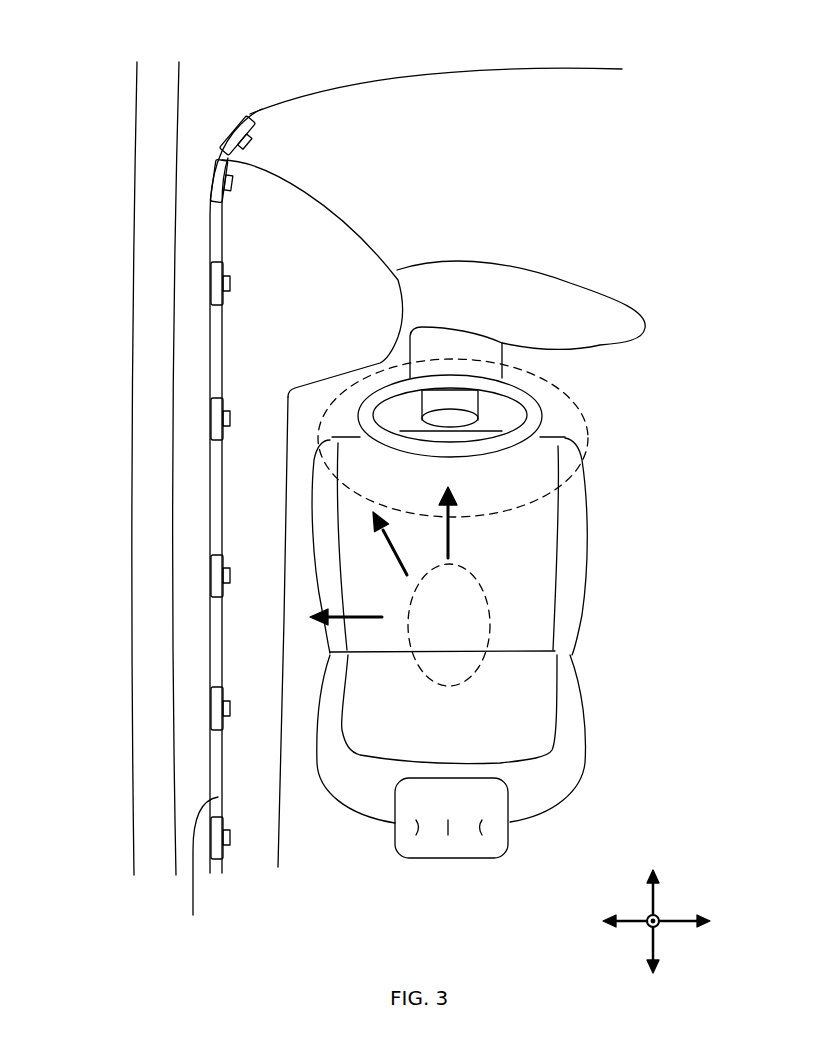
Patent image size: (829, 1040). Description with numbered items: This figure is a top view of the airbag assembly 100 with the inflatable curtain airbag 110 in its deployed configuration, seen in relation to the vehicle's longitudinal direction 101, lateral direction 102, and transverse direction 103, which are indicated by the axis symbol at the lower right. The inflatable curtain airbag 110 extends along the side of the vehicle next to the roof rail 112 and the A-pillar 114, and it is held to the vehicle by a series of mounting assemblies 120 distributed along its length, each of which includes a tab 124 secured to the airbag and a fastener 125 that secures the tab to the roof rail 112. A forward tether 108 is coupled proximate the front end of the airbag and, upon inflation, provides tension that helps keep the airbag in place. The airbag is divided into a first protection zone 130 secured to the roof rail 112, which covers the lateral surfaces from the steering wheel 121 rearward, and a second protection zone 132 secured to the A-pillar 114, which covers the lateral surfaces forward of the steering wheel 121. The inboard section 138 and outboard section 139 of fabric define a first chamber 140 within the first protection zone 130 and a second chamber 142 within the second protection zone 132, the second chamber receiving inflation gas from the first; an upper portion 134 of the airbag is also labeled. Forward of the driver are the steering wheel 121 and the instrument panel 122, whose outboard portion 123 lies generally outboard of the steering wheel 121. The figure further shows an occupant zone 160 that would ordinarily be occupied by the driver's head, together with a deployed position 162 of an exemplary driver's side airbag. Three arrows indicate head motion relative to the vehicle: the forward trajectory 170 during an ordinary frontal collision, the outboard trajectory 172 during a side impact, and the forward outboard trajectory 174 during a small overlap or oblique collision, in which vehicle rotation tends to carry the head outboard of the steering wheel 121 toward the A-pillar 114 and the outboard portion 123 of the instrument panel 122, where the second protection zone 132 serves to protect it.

The airbag assembly 100 is at (385, 107).
The longitudinal direction 101 is at (657, 887).
The lateral direction 102 is at (685, 918).
The transverse direction 103 is at (658, 927).
The forward tether 108 is at (257, 113).
The inflatable curtain airbag 110 is at (420, 290).
The roof rail 112 is at (190, 418).
The A-pillar 114 is at (190, 233).
The mounting assemblies 120 is at (200, 582).
The steering wheel 121 is at (533, 397).
The instrument panel 122 is at (438, 142).
The outboard portion 123 is at (365, 205).
The tab 124 is at (217, 397).
The fastener 125 is at (232, 418).
The first protection zone 130 is at (200, 508).
The second protection zone 132 is at (283, 167).
The upper portion 134 is at (282, 708).
The inboard section 138 is at (278, 850).
The outboard section 139 is at (198, 869).
The first chamber 140 is at (268, 516).
The second chamber 142 is at (300, 286).
The occupant zone 160 is at (473, 575).
The deployed position 162 is at (588, 430).
The forward trajectory 170 is at (448, 537).
The outboard trajectory 172 is at (375, 622).
The forward outboard trajectory 174 is at (393, 552).